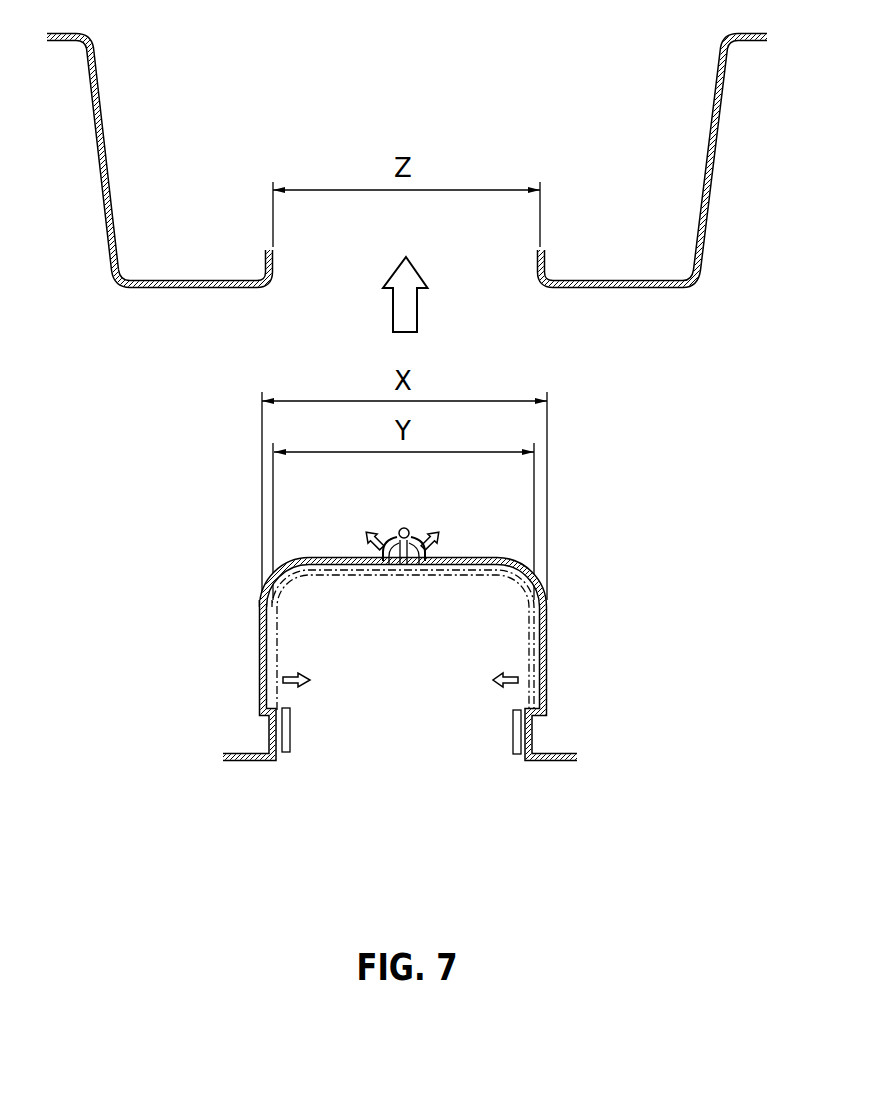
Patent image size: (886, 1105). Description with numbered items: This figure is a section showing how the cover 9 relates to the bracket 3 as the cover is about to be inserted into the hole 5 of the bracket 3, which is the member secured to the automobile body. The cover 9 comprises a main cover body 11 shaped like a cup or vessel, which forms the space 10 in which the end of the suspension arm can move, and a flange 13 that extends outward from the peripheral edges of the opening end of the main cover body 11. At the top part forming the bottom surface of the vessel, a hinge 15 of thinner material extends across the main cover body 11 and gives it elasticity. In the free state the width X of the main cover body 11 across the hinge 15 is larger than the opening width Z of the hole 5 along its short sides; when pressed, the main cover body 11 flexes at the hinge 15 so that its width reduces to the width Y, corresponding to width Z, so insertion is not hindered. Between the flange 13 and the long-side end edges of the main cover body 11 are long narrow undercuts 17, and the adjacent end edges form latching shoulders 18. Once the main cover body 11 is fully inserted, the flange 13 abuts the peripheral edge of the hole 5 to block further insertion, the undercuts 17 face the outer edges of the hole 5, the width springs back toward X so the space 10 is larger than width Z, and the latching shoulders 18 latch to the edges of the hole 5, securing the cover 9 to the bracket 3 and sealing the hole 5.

The bracket 3 is at (416, 160).
The hole 5 is at (541, 255).
The cover 9 is at (401, 648).
The space 10 is at (383, 661).
The main cover body 11 is at (252, 638).
The flange 13 is at (247, 762).
The hinge 15 is at (404, 528).
The undercut 17 is at (268, 738).
The latching shoulder 18 is at (266, 722).